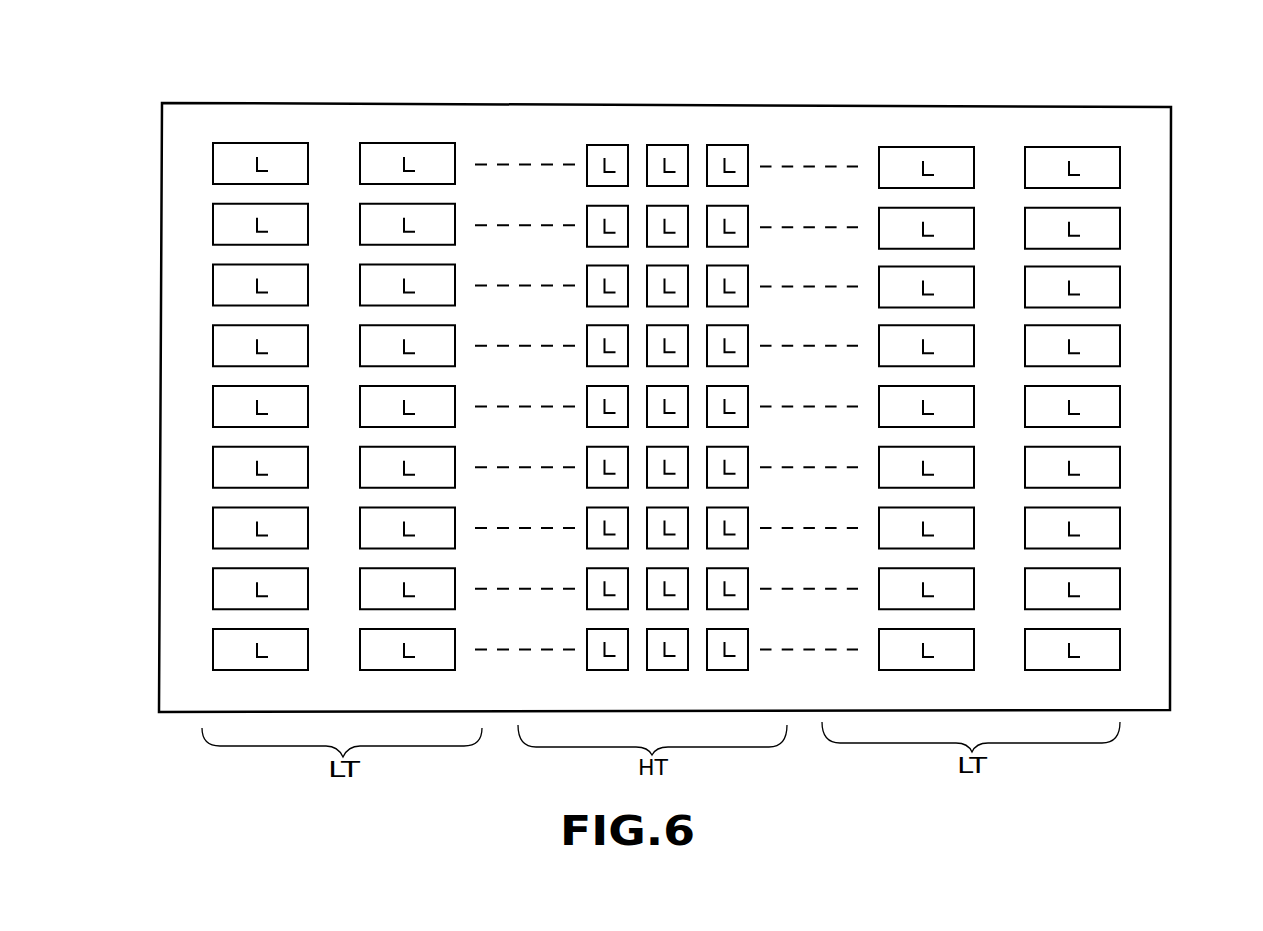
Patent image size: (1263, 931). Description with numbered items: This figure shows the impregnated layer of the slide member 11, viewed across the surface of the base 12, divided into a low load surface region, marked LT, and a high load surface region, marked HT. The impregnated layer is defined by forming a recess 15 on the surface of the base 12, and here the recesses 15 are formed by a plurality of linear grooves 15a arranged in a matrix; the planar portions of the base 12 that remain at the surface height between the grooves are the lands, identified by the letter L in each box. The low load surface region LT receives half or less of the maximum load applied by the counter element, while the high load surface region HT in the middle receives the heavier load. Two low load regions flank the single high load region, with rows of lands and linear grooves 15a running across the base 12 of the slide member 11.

The slide member 11 is at (1078, 104).
The base 12 is at (728, 363).
The recess 15 is at (815, 124).
The linear groove 15a is at (697, 151).